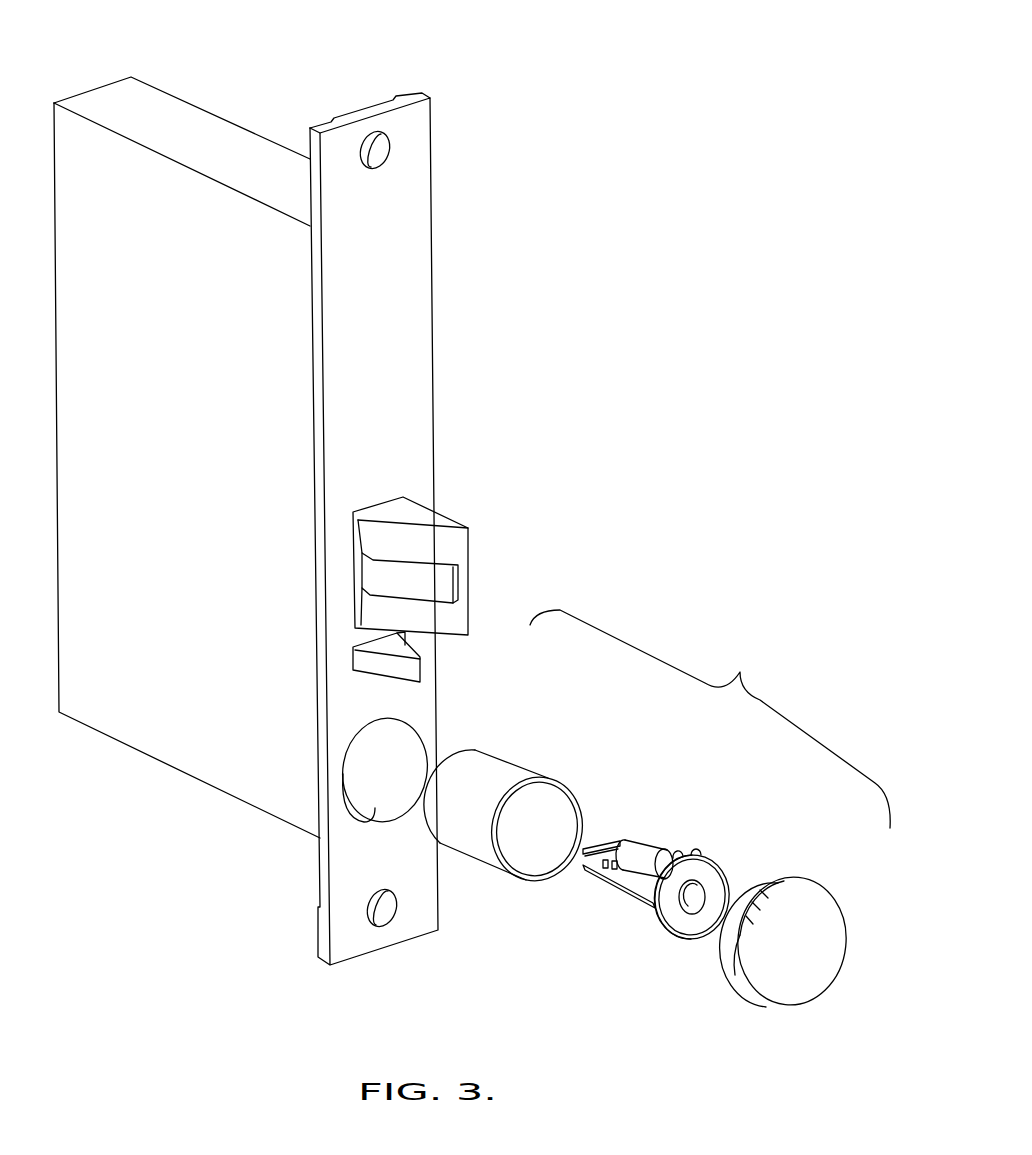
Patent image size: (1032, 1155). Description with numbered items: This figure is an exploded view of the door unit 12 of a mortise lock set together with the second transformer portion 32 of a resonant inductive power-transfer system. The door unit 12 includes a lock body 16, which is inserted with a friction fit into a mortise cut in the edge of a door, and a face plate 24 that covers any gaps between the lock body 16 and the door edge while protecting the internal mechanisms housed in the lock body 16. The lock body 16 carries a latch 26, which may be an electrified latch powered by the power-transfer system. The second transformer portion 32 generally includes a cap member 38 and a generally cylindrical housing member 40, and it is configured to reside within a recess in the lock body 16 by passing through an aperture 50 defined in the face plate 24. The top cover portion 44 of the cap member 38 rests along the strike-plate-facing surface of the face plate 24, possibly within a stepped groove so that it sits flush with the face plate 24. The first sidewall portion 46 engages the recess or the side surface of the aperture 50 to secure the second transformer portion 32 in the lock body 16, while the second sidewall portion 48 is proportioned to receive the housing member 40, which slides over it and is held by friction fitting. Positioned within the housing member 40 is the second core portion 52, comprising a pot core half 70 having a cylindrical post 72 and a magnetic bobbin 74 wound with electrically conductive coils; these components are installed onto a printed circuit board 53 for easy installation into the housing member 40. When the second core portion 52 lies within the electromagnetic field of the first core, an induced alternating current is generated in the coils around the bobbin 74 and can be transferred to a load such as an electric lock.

The door unit 12 is at (692, 46).
The lock body 16 is at (127, 728).
The face plate 24 is at (415, 237).
The latch 26 is at (437, 522).
The second transformer portion 32 is at (737, 650).
The cap member 38 is at (791, 1011).
The housing member 40 is at (497, 755).
The top cover portion 44 is at (823, 930).
The first sidewall portion 46 is at (757, 880).
The second sidewall portion 48 is at (725, 957).
The aperture 50 is at (365, 822).
The second core portion 52 is at (637, 832).
The printed circuit board 53 is at (628, 877).
The pot core half 70 is at (678, 944).
The cylindrical post 72 is at (697, 897).
The magnetic bobbin 74 is at (652, 912).